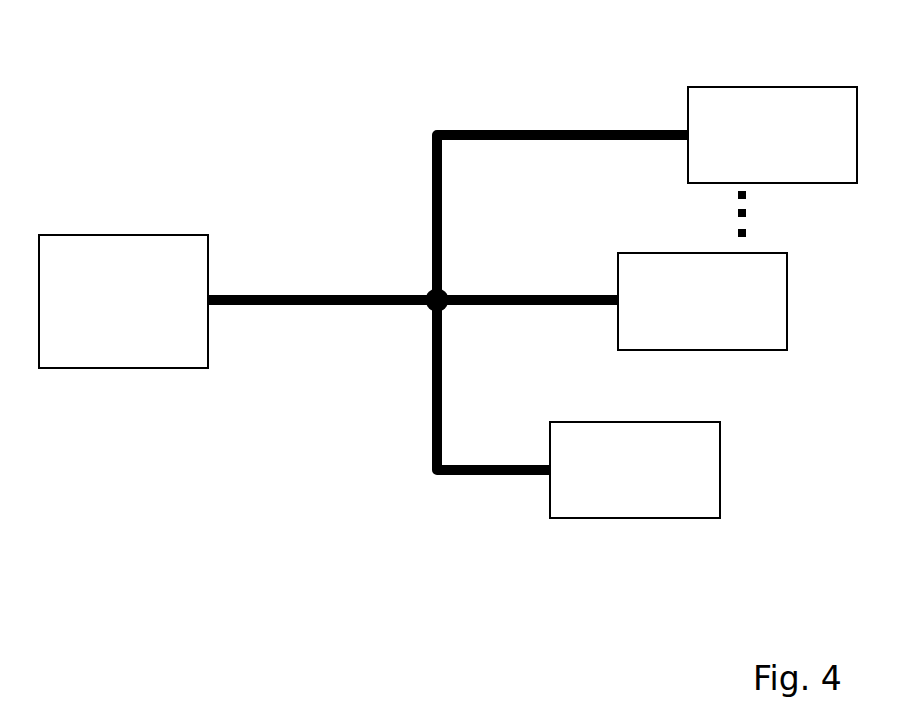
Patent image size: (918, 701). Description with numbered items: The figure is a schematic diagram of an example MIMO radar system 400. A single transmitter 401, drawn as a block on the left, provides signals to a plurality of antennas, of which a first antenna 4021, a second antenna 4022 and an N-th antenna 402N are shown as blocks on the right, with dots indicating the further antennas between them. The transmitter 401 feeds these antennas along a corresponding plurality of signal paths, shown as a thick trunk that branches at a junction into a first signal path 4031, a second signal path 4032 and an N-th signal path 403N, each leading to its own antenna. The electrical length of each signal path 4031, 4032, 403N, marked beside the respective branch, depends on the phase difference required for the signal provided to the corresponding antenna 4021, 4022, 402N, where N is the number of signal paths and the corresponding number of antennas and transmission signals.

The MIMO radar system 400 is at (226, 124).
The transmitter 401 is at (123, 301).
The antenna 402N is at (772, 135).
The antenna 4022 is at (702, 301).
The antenna 4021 is at (635, 470).
The signal path 403N is at (480, 131).
The signal path 4032 is at (506, 296).
The signal path 4031 is at (485, 477).